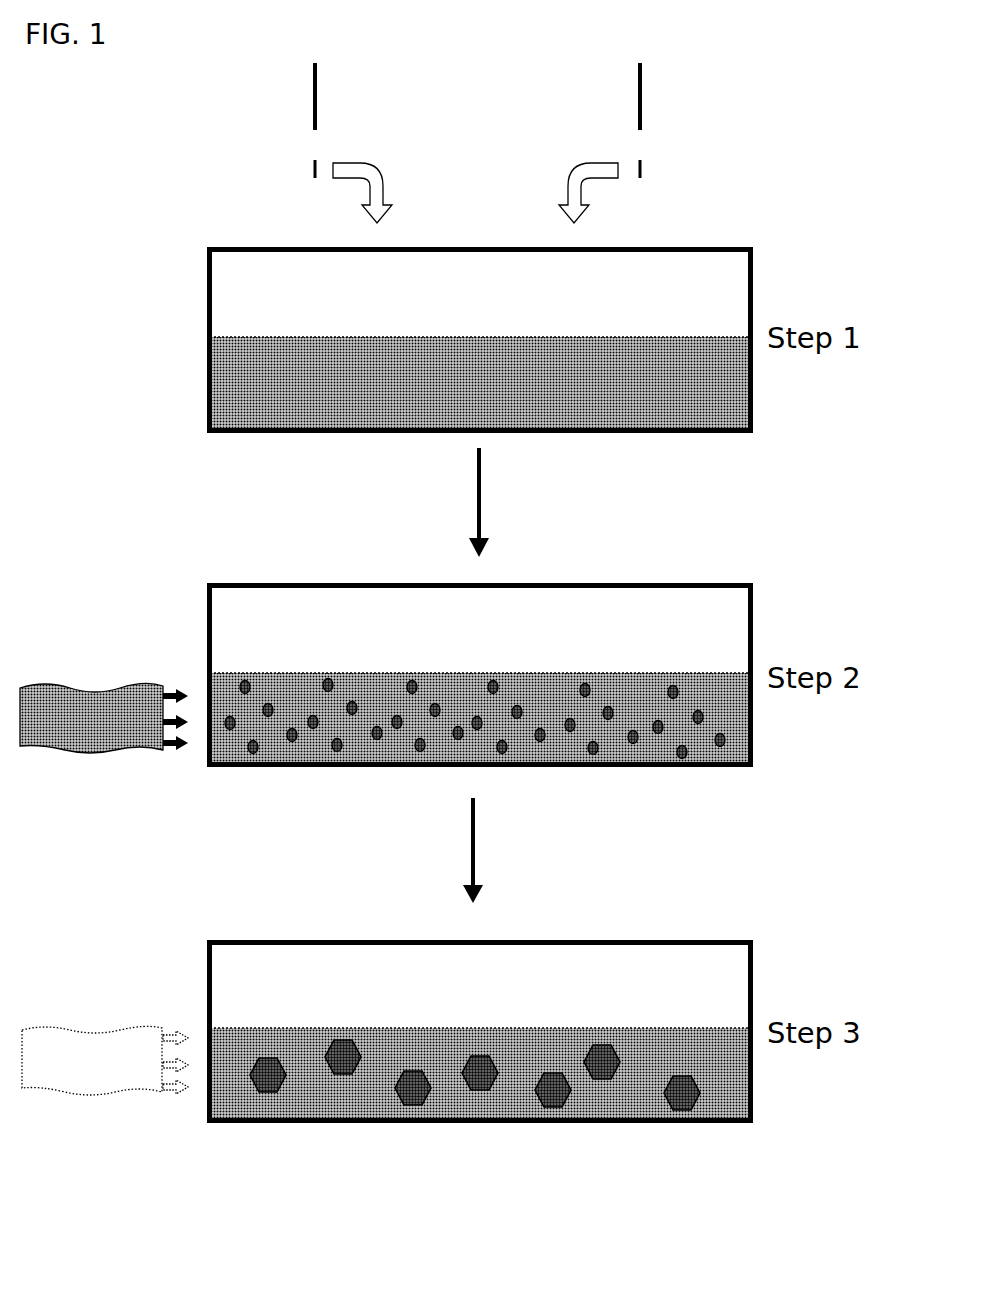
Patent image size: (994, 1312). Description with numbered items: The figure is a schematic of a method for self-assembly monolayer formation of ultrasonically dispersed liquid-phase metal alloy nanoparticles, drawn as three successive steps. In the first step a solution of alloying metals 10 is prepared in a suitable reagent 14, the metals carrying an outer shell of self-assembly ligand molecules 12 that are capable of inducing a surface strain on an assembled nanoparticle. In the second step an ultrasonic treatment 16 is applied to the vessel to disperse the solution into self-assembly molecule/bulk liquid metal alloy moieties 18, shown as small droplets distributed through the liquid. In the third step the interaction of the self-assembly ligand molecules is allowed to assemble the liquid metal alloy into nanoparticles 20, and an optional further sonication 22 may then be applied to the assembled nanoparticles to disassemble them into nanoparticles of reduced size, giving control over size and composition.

The solution of alloying metals 10 is at (248, 357).
The self-assembly ligand molecules 12 is at (290, 186).
The reagent 14 is at (315, 125).
The ultrasonic dispersion 16 is at (125, 686).
The self-assembly molecule/bulk liquid metal alloy moieties 18 is at (678, 690).
The nanoparticles 20 is at (267, 1058).
The further sonication 22 is at (93, 1028).